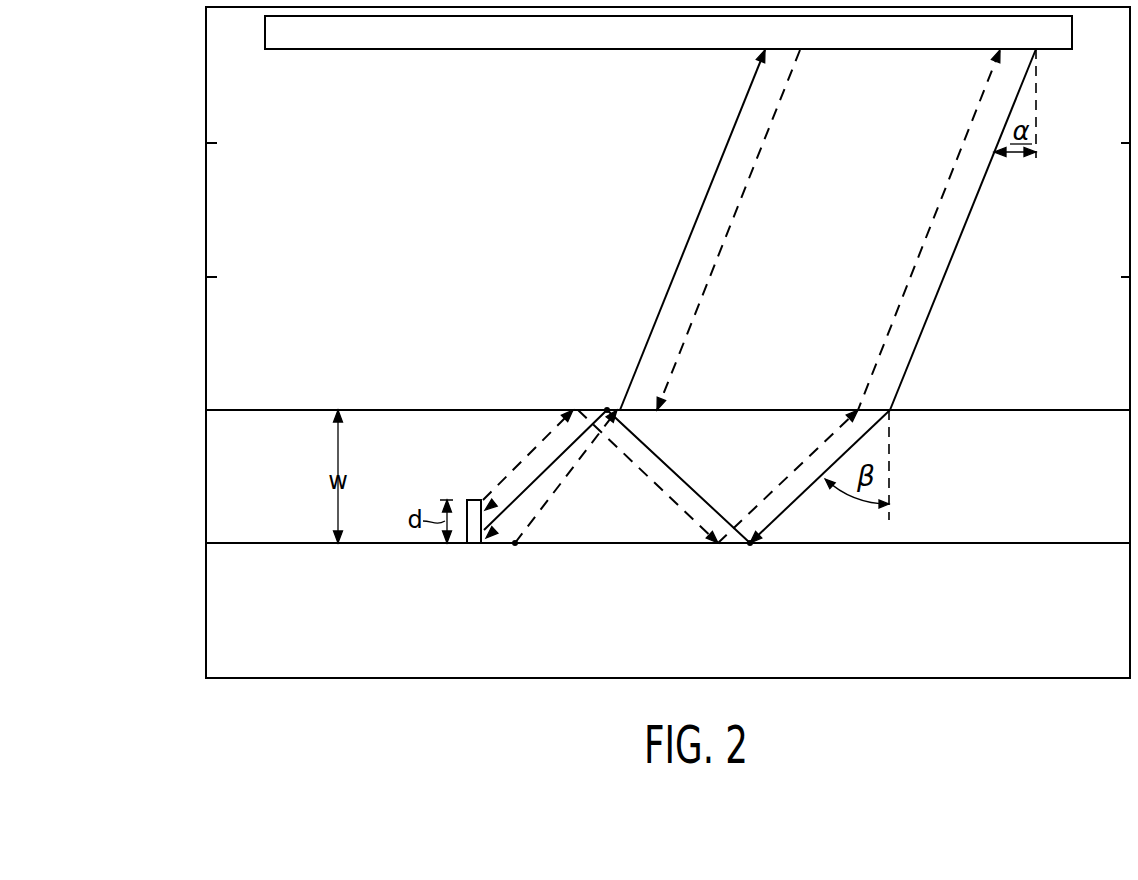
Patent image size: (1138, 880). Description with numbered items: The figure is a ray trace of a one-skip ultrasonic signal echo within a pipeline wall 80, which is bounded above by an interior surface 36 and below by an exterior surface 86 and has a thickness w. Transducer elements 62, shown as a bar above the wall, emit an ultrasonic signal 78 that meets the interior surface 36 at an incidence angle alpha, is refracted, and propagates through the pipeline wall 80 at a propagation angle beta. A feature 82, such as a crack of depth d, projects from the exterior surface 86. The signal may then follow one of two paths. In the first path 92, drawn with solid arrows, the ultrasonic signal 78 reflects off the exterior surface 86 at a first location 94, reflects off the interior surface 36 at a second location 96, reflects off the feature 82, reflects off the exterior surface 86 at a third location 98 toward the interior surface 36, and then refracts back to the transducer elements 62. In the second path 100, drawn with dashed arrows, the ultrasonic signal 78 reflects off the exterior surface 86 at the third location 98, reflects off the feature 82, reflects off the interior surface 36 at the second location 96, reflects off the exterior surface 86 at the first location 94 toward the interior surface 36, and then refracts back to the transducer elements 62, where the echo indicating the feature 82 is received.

The interior surface 36 is at (386, 410).
The transducer elements 62 is at (654, 44).
The ultrasonic signal 78 is at (710, 272).
The pipeline wall 80 is at (1009, 486).
The feature 82 is at (477, 500).
The exterior surface 86 is at (373, 543).
The first path 92 is at (795, 503).
The first location 94 is at (733, 548).
The second location 96 is at (602, 405).
The third location 98 is at (515, 548).
The second path 100 is at (686, 333).